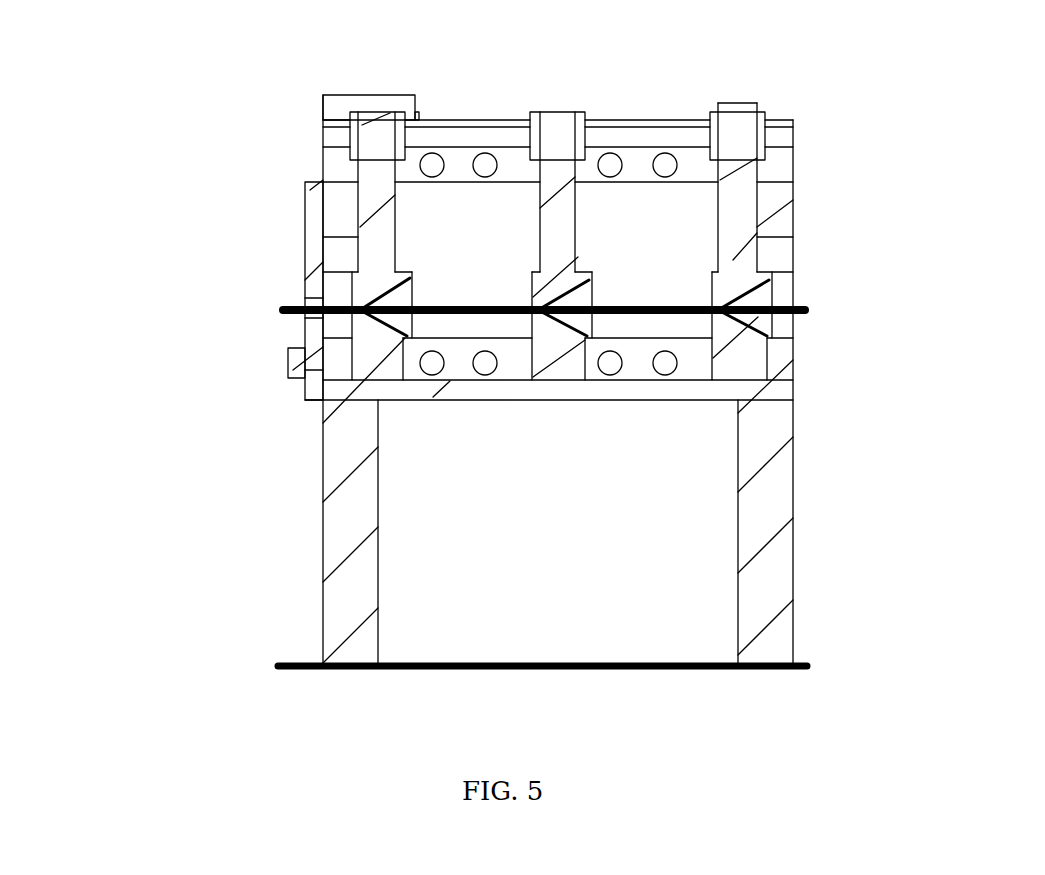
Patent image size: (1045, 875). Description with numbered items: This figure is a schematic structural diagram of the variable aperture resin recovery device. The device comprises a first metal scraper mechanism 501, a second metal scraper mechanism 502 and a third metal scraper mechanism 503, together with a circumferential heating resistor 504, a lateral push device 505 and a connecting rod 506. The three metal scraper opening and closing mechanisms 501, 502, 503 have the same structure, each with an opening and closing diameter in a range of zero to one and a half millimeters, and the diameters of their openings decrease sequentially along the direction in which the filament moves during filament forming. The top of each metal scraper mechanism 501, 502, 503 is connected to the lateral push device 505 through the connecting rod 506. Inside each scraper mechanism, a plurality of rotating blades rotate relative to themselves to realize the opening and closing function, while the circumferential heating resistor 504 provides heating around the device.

The first metal scraper mechanism 501 is at (392, 283).
The second metal scraper mechanism 502 is at (583, 300).
The third metal scraper mechanism 503 is at (783, 285).
The circumferential heating resistor 504 is at (663, 170).
The lateral push device 505 is at (372, 102).
The connecting rod 506 is at (637, 137).